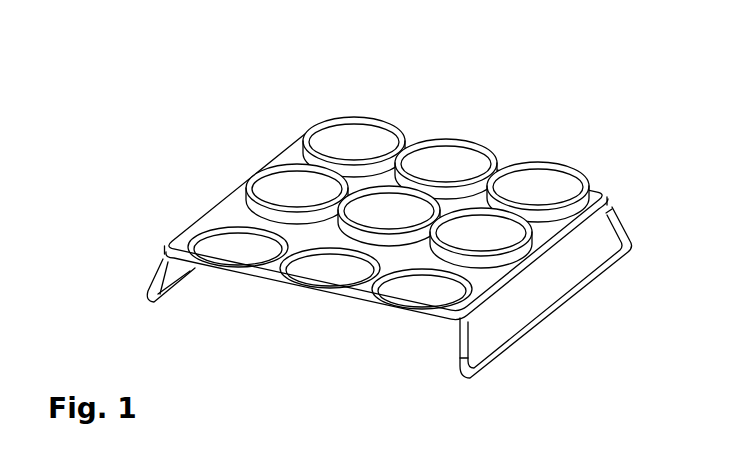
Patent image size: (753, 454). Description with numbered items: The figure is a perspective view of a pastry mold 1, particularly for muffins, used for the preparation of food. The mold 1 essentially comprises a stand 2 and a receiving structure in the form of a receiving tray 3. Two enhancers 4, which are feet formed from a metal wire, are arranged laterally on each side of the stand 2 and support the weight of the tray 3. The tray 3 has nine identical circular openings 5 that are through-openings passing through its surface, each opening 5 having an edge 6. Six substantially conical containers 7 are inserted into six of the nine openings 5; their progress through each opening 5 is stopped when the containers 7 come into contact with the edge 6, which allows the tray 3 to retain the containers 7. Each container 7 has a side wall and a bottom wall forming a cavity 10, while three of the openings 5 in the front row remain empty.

The mold 1 is at (117, 80).
The stand 2 is at (228, 198).
The receiving tray 3 is at (487, 275).
The enhancers 4 is at (157, 274).
The openings 5 is at (423, 292).
The edge 6 is at (207, 233).
The container 7 is at (383, 123).
The cavity 10 is at (338, 145).